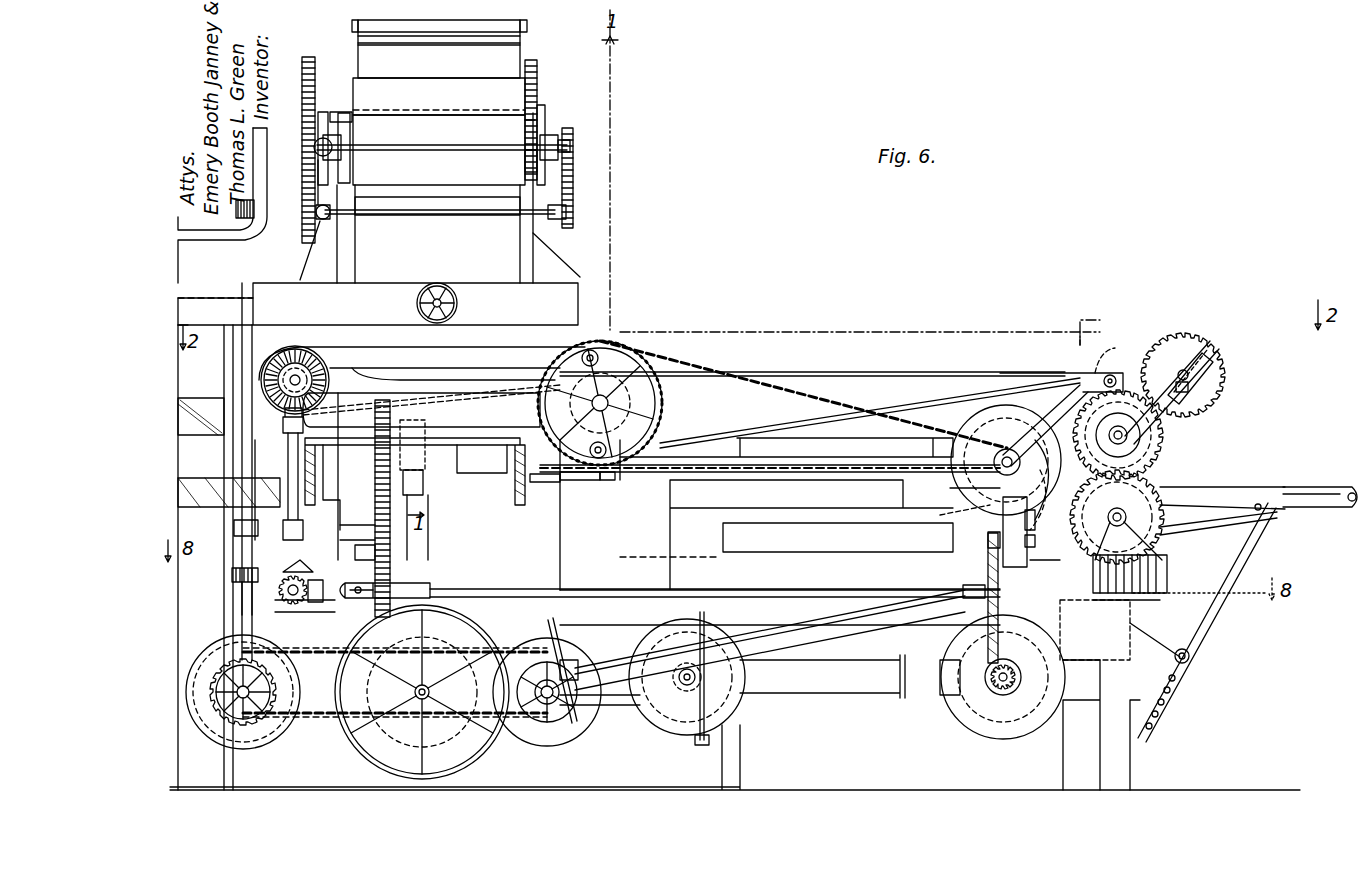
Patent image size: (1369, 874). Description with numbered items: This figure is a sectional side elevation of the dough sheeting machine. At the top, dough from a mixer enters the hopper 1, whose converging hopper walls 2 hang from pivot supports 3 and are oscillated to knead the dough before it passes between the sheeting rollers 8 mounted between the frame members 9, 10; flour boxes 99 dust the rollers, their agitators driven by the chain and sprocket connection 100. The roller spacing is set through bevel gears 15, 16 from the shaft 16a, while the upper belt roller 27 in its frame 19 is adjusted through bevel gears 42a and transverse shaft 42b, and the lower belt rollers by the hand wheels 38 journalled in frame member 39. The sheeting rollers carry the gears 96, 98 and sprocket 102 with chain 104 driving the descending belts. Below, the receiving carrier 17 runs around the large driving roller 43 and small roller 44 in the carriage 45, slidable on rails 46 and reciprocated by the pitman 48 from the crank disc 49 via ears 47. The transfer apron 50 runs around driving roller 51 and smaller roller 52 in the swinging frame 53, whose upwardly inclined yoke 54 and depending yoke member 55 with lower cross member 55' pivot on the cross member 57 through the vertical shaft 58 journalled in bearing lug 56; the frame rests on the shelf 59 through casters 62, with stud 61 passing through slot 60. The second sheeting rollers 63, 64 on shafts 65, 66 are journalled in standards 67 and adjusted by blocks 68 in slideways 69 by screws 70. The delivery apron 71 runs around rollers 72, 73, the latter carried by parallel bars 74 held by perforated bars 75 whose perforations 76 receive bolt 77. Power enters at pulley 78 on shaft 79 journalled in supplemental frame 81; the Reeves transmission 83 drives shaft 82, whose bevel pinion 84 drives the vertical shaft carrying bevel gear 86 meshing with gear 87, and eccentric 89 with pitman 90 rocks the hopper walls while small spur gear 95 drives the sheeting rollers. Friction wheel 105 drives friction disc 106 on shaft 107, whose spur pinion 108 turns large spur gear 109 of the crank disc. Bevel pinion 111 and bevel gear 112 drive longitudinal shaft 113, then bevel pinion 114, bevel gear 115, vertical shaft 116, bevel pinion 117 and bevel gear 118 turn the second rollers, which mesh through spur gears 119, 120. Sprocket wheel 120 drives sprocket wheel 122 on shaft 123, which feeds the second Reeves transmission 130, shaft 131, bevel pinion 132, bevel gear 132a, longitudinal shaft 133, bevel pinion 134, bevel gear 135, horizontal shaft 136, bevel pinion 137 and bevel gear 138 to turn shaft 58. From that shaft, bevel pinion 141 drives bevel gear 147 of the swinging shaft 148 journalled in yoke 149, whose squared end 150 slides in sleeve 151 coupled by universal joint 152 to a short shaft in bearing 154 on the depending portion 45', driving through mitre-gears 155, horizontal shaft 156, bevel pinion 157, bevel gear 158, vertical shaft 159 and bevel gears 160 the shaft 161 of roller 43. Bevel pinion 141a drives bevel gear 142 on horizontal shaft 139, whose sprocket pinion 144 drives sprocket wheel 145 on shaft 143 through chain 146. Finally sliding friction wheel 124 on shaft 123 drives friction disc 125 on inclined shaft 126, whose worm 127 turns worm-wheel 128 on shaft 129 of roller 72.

The hopper 1 is at (358, 40).
The converging hopper walls 2 is at (439, 49).
The pivot supports 3 is at (352, 24).
The sheeting rollers 8 is at (439, 150).
The frame member 9 is at (562, 265).
The frame member 10 is at (303, 250).
The bevel gear 15 is at (340, 132).
The bevel gear 16 is at (342, 147).
The shaft 16a is at (423, 145).
The receiving carrier 17 is at (345, 346).
The frame 19 is at (345, 255).
The upper roller 27 is at (358, 214).
The adjusting hand wheel 38 is at (458, 303).
The frame member 39 is at (568, 296).
The bevel gears 42a is at (588, 218).
The transverse shaft 42b is at (443, 215).
The large driving roller 43 is at (290, 352).
The small roller 44 is at (628, 340).
The carriage 45 is at (453, 366).
The depending portion of carriage 45' is at (227, 470).
The rails 46 is at (315, 495).
The ears 47 is at (424, 453).
The pitman 48 is at (424, 478).
The crank disc 49 is at (409, 545).
The transfer apron 50 is at (900, 372).
The driving roller 51 is at (620, 390).
The smaller roller 52 is at (1110, 354).
The swinging frame 53 is at (846, 448).
The upwardly inclined yoke 54 is at (1060, 392).
The depending yoke member 55 is at (1044, 521).
The lower cross member 55' is at (1044, 540).
The bearing lug 56 is at (1000, 575).
The cross member of main frame 57 is at (1045, 559).
The vertical shaft 58 is at (1003, 677).
The ledge or shelf 59 is at (578, 480).
The elongated slot 60 is at (622, 481).
The stud 61 is at (605, 480).
The anti-friction rollers or casters 62 is at (586, 403).
The sheeting roller 63 is at (1160, 450).
The sheeting roller 64 is at (1225, 372).
The shaft 65 is at (1130, 437).
The shaft 66 is at (1190, 384).
The standards 67 is at (1140, 455).
The blocks 68 is at (1212, 343).
The slideways 69 is at (1190, 372).
The screws 70 is at (1205, 360).
The delivery apron 71 is at (1270, 490).
The roller 72 is at (1109, 546).
The roller 73 is at (1352, 503).
The parallel bars 74 is at (1207, 500).
The bars 75 is at (1200, 628).
The perforations 76 is at (1168, 712).
The bolt 77 is at (1190, 660).
The pulley 78 is at (360, 760).
The lower horizontal shaft 79 is at (414, 692).
The central supplemental supporting frame 81 is at (722, 763).
The shaft 82 is at (210, 730).
The Reeves variable speed transmission 83 is at (268, 742).
The bevel pinion 84 is at (338, 658).
The bevel gear 86 is at (242, 218).
The gear 87 is at (230, 205).
The eccentric 89 is at (525, 168).
The pitman 90 is at (538, 78).
The small spur gear 95 is at (315, 140).
The large spur gear 96 is at (320, 74).
The gear 98 is at (350, 165).
The flour boxes 99 is at (439, 96).
The chain and sprocket connection 100 is at (530, 124).
The sprocket 102 is at (572, 147).
The sprocket chain 104 is at (573, 180).
The friction wheel 105 is at (234, 530).
The friction disc 106 is at (255, 462).
The horizontal shaft 107 is at (340, 523).
The spur pinion 108 is at (372, 527).
The large spur gear 109 is at (375, 455).
The bevel pinion 111 is at (232, 575).
The bevel gear 112 is at (242, 595).
The longitudinal shaft 113 is at (770, 628).
The bevel pinion 114 is at (1100, 642).
The bevel gear 115 is at (1160, 612).
The vertical shaft 116 is at (1160, 498).
The bevel pinion 117 is at (1078, 384).
The bevel gear 118 is at (1049, 480).
The spur gear 119 is at (1165, 425).
The sprocket wheel 120 is at (1160, 336).
The sprocket wheel 122 is at (530, 722).
The shaft 123 is at (558, 725).
The sliding friction wheel 124 is at (552, 645).
The friction disc 125 is at (556, 625).
The inclined shaft 126 is at (795, 636).
The worm 127 is at (1167, 580).
The worm-wheel 128 is at (1150, 525).
The shaft 129 is at (1048, 493).
The second Reeves variable speed transmission 130 is at (622, 712).
The shaft 131 is at (678, 677).
The bevel pinion 132 is at (672, 688).
The bevel gear 132a is at (697, 742).
The longitudinal shaft 133 is at (830, 678).
The bevel pinion 134 is at (940, 700).
The bevel gear 135 is at (1030, 733).
The horizontal shaft 136 is at (418, 304).
The bevel pinion 137 is at (996, 678).
The bevel gear 138 is at (1078, 675).
The horizontal shaft 139 is at (1008, 450).
The bevel pinion 141 is at (988, 540).
The bevel pinion 141a is at (945, 517).
The bevel gear 142 is at (985, 420).
The shaft 143 is at (421, 410).
The sprocket pinion 144 is at (965, 490).
The sprocket wheel 145 is at (660, 408).
The sprocket chain 146 is at (862, 410).
The bevel gear 147 is at (988, 575).
The laterally swinging longitudinal shaft 148 is at (752, 590).
The yoke 149 is at (940, 602).
The squared end 150 is at (440, 588).
The sleeve 151 is at (428, 582).
The universal joint 152 is at (378, 583).
The bearing 154 is at (320, 590).
The mitre-gears 155 is at (302, 602).
The horizontal shaft 156 is at (288, 592).
The bevel pinion 157 is at (308, 572).
The bevel gear 158 is at (340, 557).
The vertical shaft 159 is at (290, 432).
The bevel gears 160 is at (292, 410).
The shaft 161 is at (306, 370).